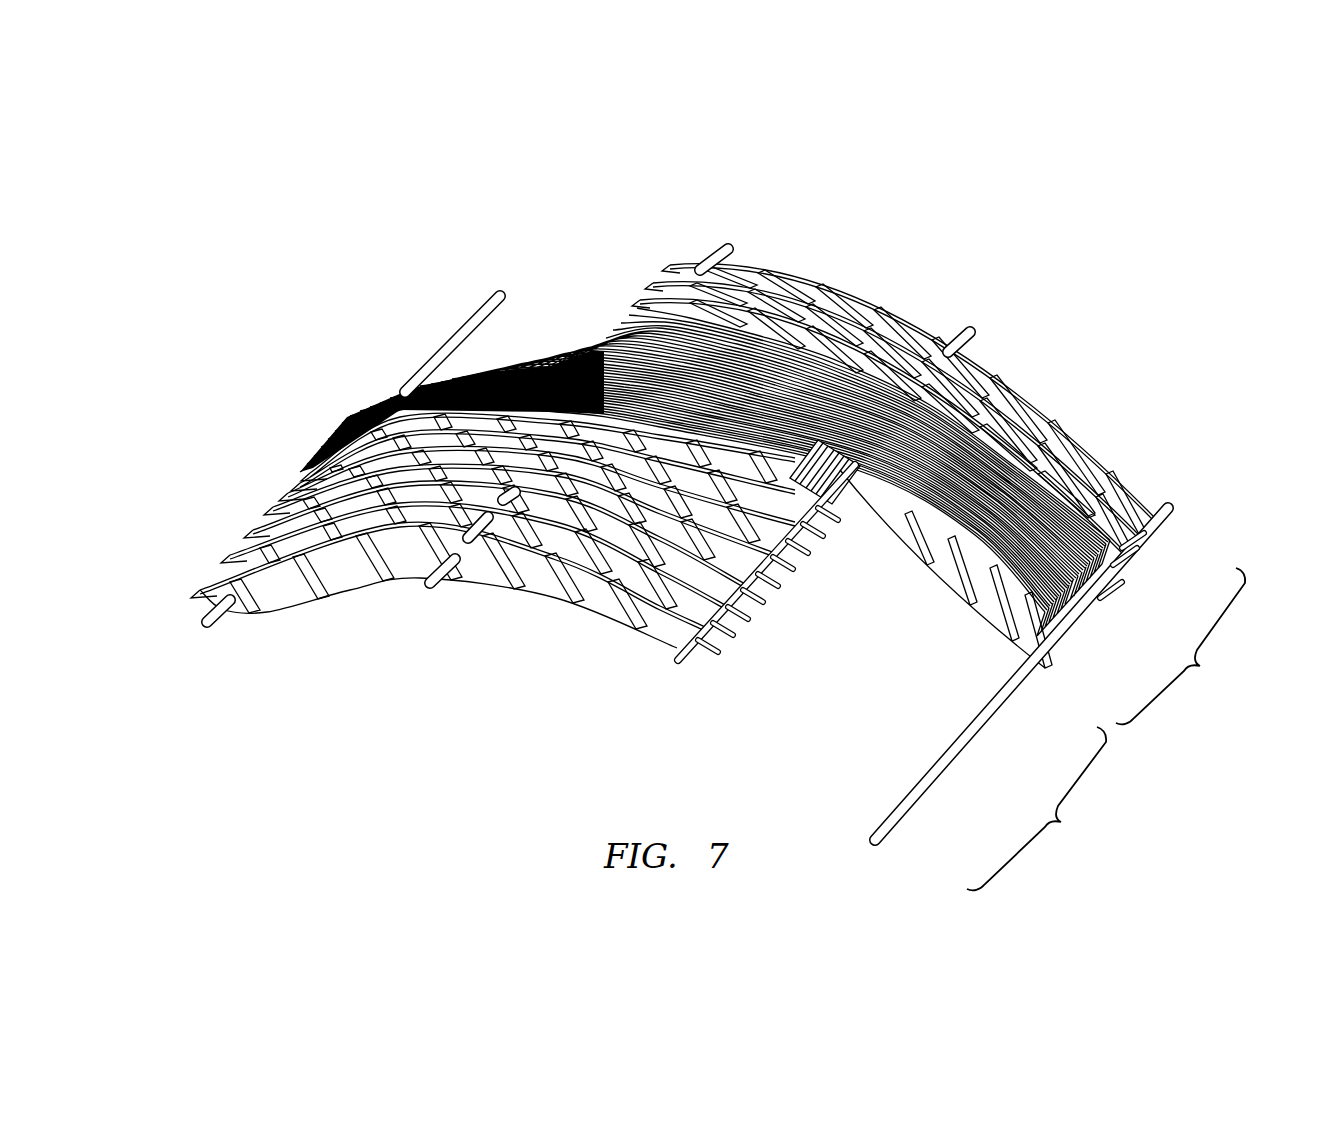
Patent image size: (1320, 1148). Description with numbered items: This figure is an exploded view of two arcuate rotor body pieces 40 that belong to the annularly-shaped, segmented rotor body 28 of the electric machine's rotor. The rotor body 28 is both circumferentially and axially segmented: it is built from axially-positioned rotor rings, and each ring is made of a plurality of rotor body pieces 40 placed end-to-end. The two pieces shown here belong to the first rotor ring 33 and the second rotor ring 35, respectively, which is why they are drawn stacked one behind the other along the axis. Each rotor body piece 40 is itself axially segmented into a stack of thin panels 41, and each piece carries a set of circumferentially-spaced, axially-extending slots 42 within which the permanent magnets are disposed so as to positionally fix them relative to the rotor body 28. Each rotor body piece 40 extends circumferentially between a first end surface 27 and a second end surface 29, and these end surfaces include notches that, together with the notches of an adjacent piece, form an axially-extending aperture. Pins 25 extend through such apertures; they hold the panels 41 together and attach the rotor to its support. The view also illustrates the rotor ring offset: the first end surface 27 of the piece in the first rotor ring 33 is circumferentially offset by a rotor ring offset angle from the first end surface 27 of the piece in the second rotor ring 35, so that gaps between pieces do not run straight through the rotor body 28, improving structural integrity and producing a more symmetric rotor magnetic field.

The rotor body 28 is at (697, 499).
The rotor body piece 40 is at (653, 463).
The slot 42 is at (548, 612).
The panel 41 is at (253, 527).
The second end surface 29 is at (633, 313).
The pin 25 is at (477, 317).
The first end surface 27 is at (773, 593).
The first rotor ring 33 is at (1180, 646).
The second rotor ring 35 is at (1036, 808).